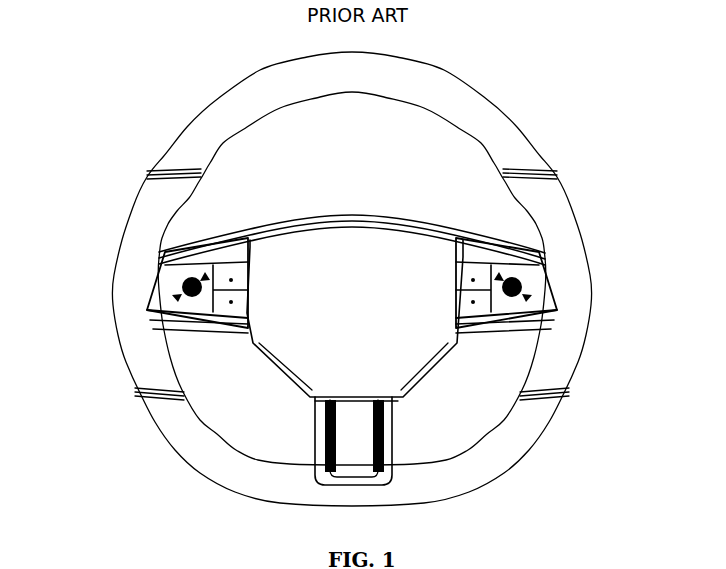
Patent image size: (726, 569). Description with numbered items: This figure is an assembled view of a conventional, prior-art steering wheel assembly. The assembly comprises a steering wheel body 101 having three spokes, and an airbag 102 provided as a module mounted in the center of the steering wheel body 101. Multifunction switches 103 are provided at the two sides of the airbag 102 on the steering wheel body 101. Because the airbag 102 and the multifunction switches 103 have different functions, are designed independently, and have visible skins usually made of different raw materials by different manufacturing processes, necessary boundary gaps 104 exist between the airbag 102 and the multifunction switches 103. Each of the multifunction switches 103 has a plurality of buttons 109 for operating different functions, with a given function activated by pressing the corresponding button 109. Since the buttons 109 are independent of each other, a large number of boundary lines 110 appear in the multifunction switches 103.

The steering wheel body 101 is at (572, 232).
The airbag 102 is at (349, 276).
The multifunction switches 103 is at (147, 308).
The gaps 104 is at (207, 252).
The buttons 109 is at (195, 322).
The boundary lines 110 is at (167, 262).